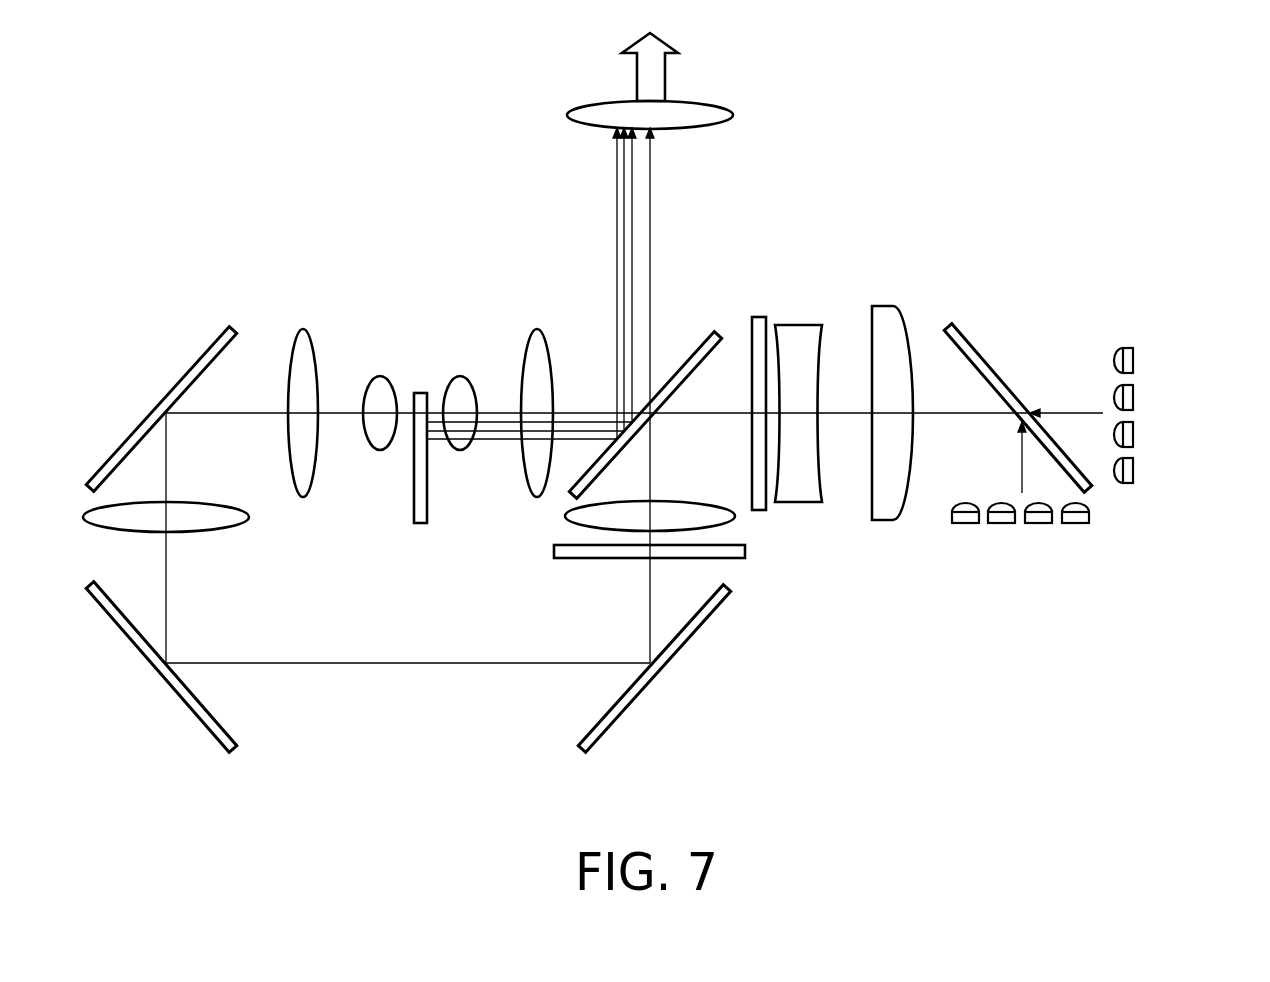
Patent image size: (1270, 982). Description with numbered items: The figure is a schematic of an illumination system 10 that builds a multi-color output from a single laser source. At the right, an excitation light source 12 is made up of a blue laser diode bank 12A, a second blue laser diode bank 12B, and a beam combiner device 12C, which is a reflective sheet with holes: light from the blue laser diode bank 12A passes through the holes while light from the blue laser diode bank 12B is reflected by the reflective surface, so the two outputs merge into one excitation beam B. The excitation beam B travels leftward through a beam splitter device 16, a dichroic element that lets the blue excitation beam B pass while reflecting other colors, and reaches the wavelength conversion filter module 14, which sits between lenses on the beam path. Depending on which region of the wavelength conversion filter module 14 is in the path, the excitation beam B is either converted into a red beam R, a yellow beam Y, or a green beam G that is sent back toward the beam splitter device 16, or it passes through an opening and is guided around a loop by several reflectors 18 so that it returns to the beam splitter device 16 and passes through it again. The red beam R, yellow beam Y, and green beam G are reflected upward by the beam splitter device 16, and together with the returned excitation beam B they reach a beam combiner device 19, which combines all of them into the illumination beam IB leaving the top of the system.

The illumination system 10 is at (1187, 797).
The excitation light source 12 is at (1101, 447).
The blue laser diode bank 12A is at (1158, 415).
The blue laser diode bank 12B is at (1073, 523).
The beam combiner device 12C is at (1092, 490).
The wavelength conversion filter module 14 is at (418, 393).
The beam splitter device 16 is at (722, 333).
The reflectors 18 is at (213, 342).
The beam combiner device 19 is at (676, 129).
The illumination beam IB is at (665, 80).
The excitation beam B is at (650, 232).
The green beam G is at (617, 190).
The yellow beam Y is at (624, 229).
The red beam R is at (632, 272).